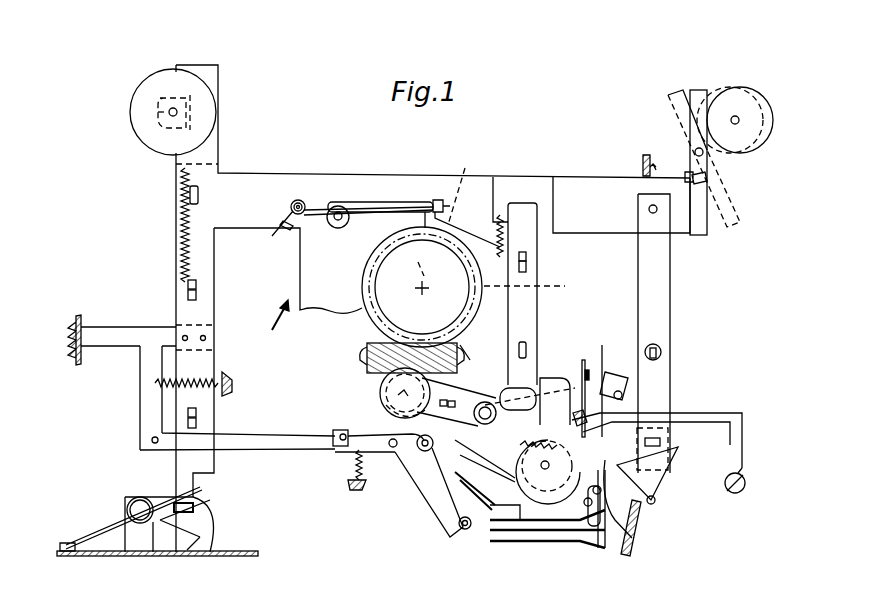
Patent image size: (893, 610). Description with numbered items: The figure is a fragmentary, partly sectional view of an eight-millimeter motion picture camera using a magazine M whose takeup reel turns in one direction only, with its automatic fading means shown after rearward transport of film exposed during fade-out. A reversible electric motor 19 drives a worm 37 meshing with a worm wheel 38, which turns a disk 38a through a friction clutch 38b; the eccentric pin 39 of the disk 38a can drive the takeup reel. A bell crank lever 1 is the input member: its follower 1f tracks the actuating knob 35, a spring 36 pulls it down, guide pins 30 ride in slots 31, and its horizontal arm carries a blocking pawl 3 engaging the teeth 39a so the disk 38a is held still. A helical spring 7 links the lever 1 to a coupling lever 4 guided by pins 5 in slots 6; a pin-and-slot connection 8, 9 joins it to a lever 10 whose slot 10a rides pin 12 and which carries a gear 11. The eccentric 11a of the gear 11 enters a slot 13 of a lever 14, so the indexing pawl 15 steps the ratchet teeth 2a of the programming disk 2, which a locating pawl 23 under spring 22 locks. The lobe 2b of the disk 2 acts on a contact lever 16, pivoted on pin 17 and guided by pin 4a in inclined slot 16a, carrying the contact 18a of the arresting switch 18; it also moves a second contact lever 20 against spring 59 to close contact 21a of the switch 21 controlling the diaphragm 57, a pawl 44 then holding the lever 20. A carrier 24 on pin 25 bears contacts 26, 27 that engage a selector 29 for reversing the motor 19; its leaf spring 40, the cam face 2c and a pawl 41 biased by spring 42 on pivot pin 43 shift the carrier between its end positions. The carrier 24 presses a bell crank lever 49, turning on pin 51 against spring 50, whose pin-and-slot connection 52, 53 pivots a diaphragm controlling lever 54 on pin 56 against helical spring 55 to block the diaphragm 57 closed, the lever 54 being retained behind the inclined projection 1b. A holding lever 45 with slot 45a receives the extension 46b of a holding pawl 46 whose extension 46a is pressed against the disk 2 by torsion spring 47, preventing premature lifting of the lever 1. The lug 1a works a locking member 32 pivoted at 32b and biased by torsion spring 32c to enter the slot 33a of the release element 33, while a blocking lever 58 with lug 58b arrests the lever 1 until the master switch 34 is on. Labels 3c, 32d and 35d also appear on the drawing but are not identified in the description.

The bell crank lever 1 is at (278, 176).
The lug 1a is at (198, 508).
The inclined projection 1b is at (176, 325).
The follower 1f is at (182, 95).
The programming disk 2 is at (545, 545).
The ratchet teeth 2a is at (515, 405).
The lobe 2b is at (548, 472).
The cam face 2c is at (565, 543).
The blocking pawl 3 is at (350, 200).
The lever pivot 3c is at (304, 202).
The coupling lever 4 is at (528, 203).
The pin 4a is at (646, 347).
The guide pins 5 is at (527, 256).
The elongated slots 6 is at (527, 268).
The helical spring 7 is at (497, 217).
The pin of pin-and-slot connection 8 is at (527, 349).
The slot of pin-and-slot connection 9 is at (515, 388).
The lever 10 is at (488, 400).
The elongated slot 10a is at (406, 416).
The gear 11 is at (381, 388).
The eccentric 11a is at (386, 393).
The pin 12 is at (450, 399).
The slot 13 is at (388, 401).
The lever 14 is at (470, 348).
The indexing pawl 15 is at (555, 391).
The contact lever 16 is at (632, 545).
The inclined slot 16a is at (617, 391).
The pivot pin 17 is at (640, 522).
The arresting switch 18 is at (642, 412).
The contact 18a is at (668, 445).
The reversible electric motor 19 is at (738, 494).
The second contact lever 20 is at (598, 522).
The switch 21 is at (582, 360).
The contact 21a is at (580, 405).
The spring 22 is at (486, 455).
The locating pawl 23 is at (502, 470).
The carrier 24 is at (420, 485).
The pin 25 is at (356, 490).
The contact 26 is at (440, 505).
The contact 27 is at (450, 500).
The selector 29 is at (525, 540).
The guide pins 30 is at (198, 285).
The vertical slots 31 is at (198, 296).
The locking member 32 is at (222, 520).
The pivot 32b is at (138, 500).
The torsion spring 32c is at (115, 530).
The wedge 32d is at (200, 540).
The camera release element 33 is at (155, 557).
The slot 33a is at (195, 557).
The master switch 34 is at (765, 100).
The actuating knob 35 is at (160, 72).
The reel hub 35d is at (158, 112).
The spring 36 is at (183, 208).
The worm 37 is at (366, 358).
The worm wheel 38 is at (362, 289).
The disk 38a is at (541, 288).
The friction clutch 38b is at (465, 168).
The motion transmitting pin 39 is at (433, 278).
The teeth 39a is at (430, 212).
The leaf spring 40 is at (468, 476).
The pawl 41 is at (535, 545).
The spring 42 is at (498, 535).
The pivot pin 43 is at (460, 528).
The pawl 44 is at (602, 360).
The holding lever 45 is at (670, 268).
The slot 45a is at (680, 460).
The holding pawl 46 is at (661, 495).
The first extension 46a is at (600, 492).
The second extension 46b is at (675, 452).
The torsion spring 47 is at (672, 470).
The bell crank lever 49 is at (412, 490).
The spring 50 is at (356, 472).
The pin 51 is at (392, 447).
The pin of pin-and-slot connection 52 is at (335, 449).
The slot 53 is at (340, 430).
The diaphragm controlling lever 54 is at (140, 390).
The helical spring 55 is at (214, 380).
The pin 56 is at (152, 438).
The diaphragm 57 is at (75, 322).
The blocking lever 58 is at (708, 228).
The lug 58b is at (700, 178).
The spring 59 is at (601, 548).
The magazine M is at (273, 322).